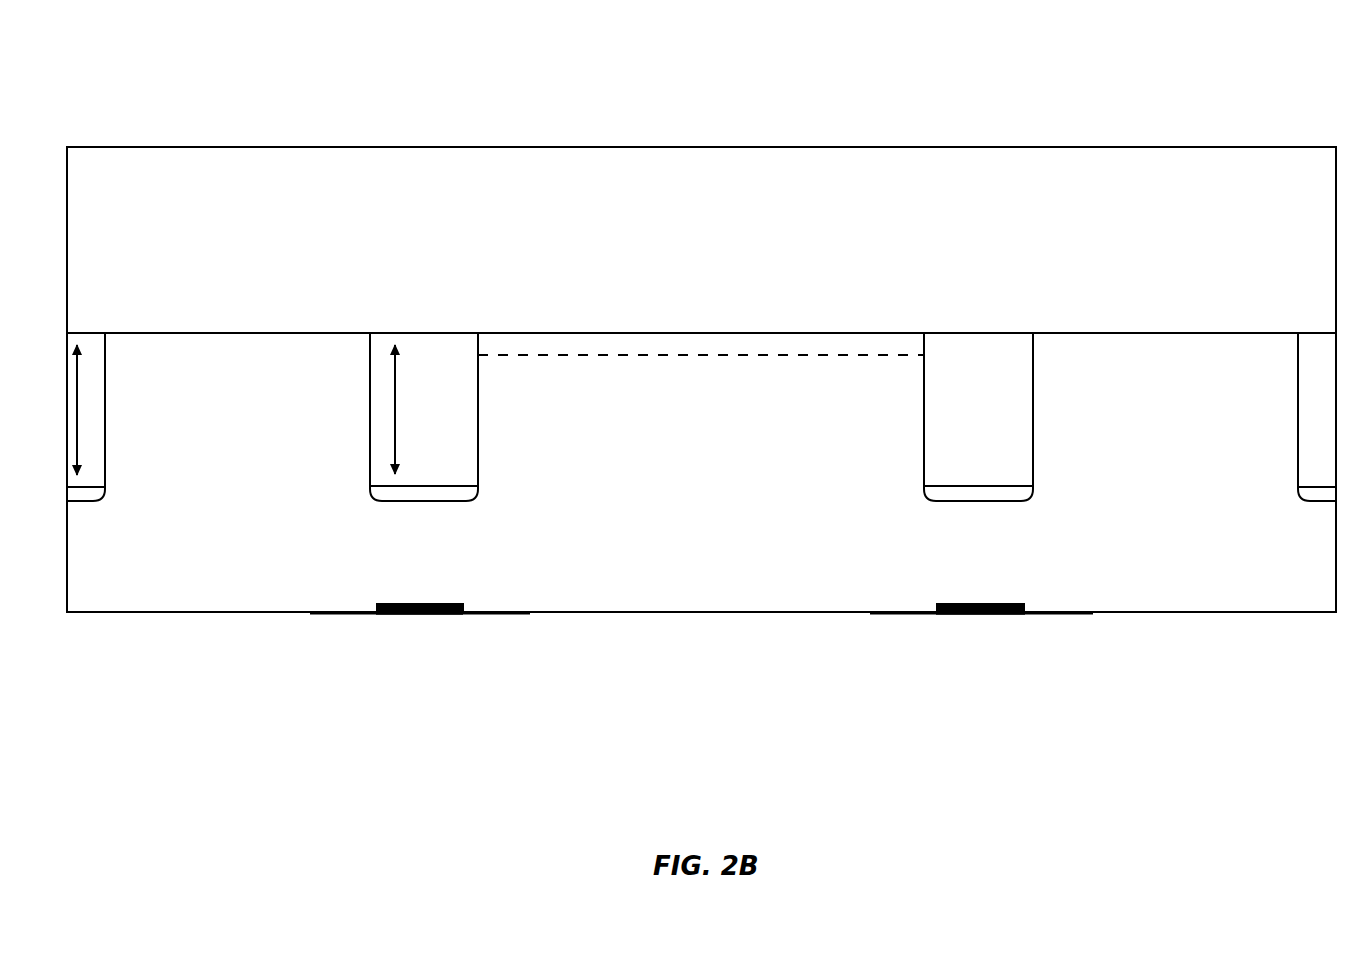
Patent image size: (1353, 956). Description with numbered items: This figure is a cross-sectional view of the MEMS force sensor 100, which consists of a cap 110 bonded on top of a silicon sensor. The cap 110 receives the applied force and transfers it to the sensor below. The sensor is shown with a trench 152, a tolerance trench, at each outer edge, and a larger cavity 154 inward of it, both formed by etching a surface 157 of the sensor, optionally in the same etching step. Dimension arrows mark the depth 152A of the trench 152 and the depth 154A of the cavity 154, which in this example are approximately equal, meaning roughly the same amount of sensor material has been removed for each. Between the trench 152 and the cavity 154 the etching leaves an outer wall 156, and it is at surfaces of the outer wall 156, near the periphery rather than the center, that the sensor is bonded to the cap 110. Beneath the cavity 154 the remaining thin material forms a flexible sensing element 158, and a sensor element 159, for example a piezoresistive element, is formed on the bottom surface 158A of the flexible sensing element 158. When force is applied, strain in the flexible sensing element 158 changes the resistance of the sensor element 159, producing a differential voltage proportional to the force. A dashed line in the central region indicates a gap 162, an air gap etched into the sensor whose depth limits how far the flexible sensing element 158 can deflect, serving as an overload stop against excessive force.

The MEMS force sensor 100 is at (221, 101).
The cap 110 is at (1170, 143).
The trench 152 is at (95, 407).
The depth of the trench 152A is at (116, 410).
The cavity 154 is at (941, 437).
The depth of the cavity 154A is at (432, 409).
The outer wall 156 is at (703, 426).
The top surface of epitaxial layer 157 is at (661, 330).
The flexible sensing element 158 is at (701, 572).
The bottom surface of the flexible sensing element 158A is at (427, 619).
The sensor element 159 is at (462, 592).
The gap 162 is at (834, 353).